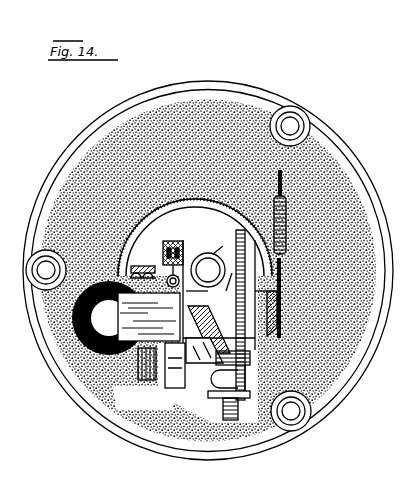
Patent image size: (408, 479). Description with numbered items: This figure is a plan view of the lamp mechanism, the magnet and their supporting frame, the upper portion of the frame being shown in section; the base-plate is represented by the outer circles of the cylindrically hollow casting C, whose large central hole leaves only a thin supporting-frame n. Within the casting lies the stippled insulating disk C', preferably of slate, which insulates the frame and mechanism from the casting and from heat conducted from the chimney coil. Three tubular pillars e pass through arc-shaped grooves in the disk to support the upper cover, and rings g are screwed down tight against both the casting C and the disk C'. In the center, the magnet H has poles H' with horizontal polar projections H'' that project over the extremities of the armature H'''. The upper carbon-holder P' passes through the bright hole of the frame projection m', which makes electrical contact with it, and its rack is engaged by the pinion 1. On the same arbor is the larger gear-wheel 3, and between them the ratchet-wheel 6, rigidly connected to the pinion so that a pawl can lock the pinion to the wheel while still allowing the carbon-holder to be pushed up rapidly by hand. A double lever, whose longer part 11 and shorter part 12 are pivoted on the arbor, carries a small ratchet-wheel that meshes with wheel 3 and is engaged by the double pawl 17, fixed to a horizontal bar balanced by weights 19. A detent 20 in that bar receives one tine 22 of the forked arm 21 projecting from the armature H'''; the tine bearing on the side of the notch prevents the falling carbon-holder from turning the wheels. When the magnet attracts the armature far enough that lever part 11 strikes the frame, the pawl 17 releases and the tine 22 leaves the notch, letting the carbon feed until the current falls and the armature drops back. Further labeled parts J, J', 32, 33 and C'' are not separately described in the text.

The pillars e is at (300, 117).
The rings g is at (188, 291).
The toothed arc segment J' is at (195, 237).
The arc segment teeth 32 is at (191, 222).
The frame J is at (192, 295).
The hatched block and pivot 33 is at (185, 270).
The carbon-holder P' is at (208, 270).
The pinion 1 is at (234, 282).
The projection m' is at (226, 249).
The gear-wheel 3 is at (248, 315).
The armature H''' is at (300, 254).
The ratchet-wheel 6 is at (258, 300).
The magnet H is at (111, 318).
The polar projections H'' is at (149, 317).
The supporting-frame n is at (68, 290).
The poles H' is at (157, 376).
The lever part 11 is at (209, 329).
The arm 21 is at (204, 350).
The lever part 12 is at (243, 348).
The double pawl 17 is at (248, 362).
The detent 20 is at (232, 374).
The tine 22 is at (232, 392).
The weights 19 is at (286, 340).
The insulating disk C' is at (330, 303).
The casing part C'' is at (197, 414).
The casting C is at (176, 433).